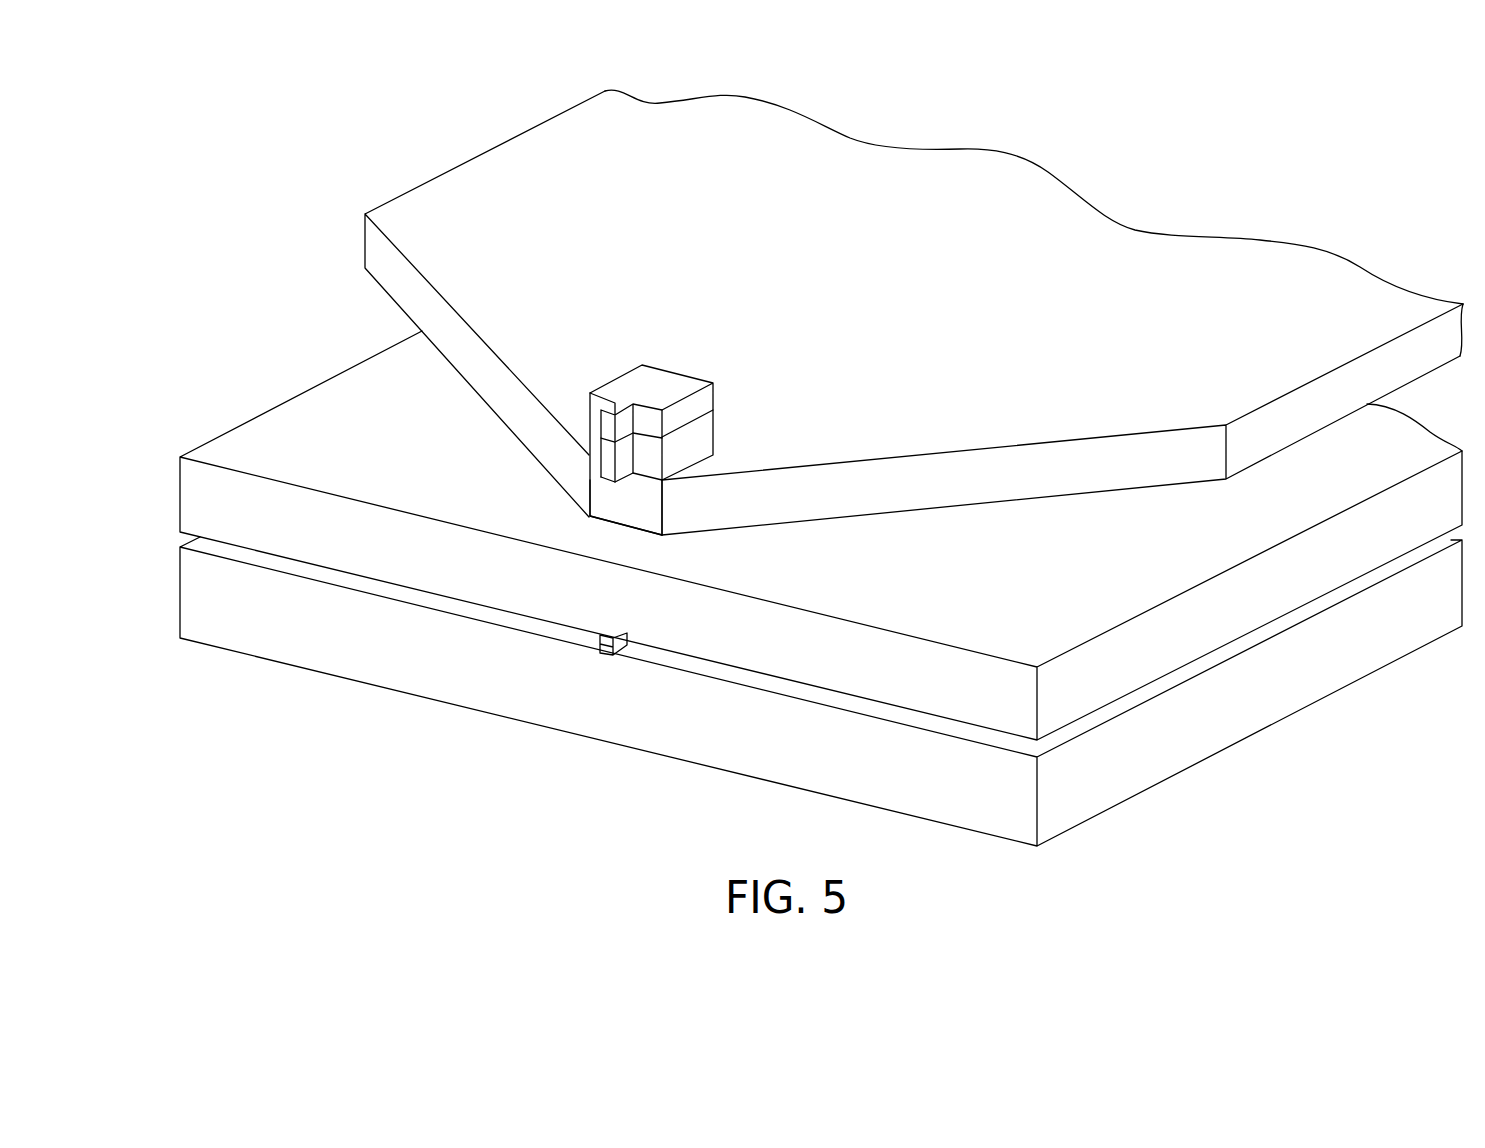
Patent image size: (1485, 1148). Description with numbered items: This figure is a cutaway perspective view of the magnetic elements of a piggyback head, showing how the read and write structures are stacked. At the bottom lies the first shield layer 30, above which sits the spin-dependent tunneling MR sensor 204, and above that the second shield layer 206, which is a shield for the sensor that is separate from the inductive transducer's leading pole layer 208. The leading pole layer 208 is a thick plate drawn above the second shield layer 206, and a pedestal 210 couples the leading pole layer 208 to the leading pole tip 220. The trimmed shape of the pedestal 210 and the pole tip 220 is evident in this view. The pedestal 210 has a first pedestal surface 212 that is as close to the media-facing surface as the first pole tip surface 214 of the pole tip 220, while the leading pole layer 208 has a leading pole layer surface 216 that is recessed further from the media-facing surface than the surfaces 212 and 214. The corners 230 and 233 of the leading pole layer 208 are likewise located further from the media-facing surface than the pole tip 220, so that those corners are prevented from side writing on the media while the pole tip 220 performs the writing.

The first shield layer 30 is at (427, 653).
The spin-dependent tunneling MR sensor 204 is at (605, 653).
The second shield layer 206 is at (893, 686).
The leading pole layer 208 is at (962, 488).
The pedestal 210 is at (620, 458).
The first pedestal surface 212 is at (583, 460).
The first pole tip surface 214 is at (583, 427).
The leading pole layer surface 216 is at (597, 496).
The leading pole tip 220 is at (615, 401).
The corner of leading pole layer 230 is at (589, 489).
The corner of leading pole layer 233 is at (660, 510).